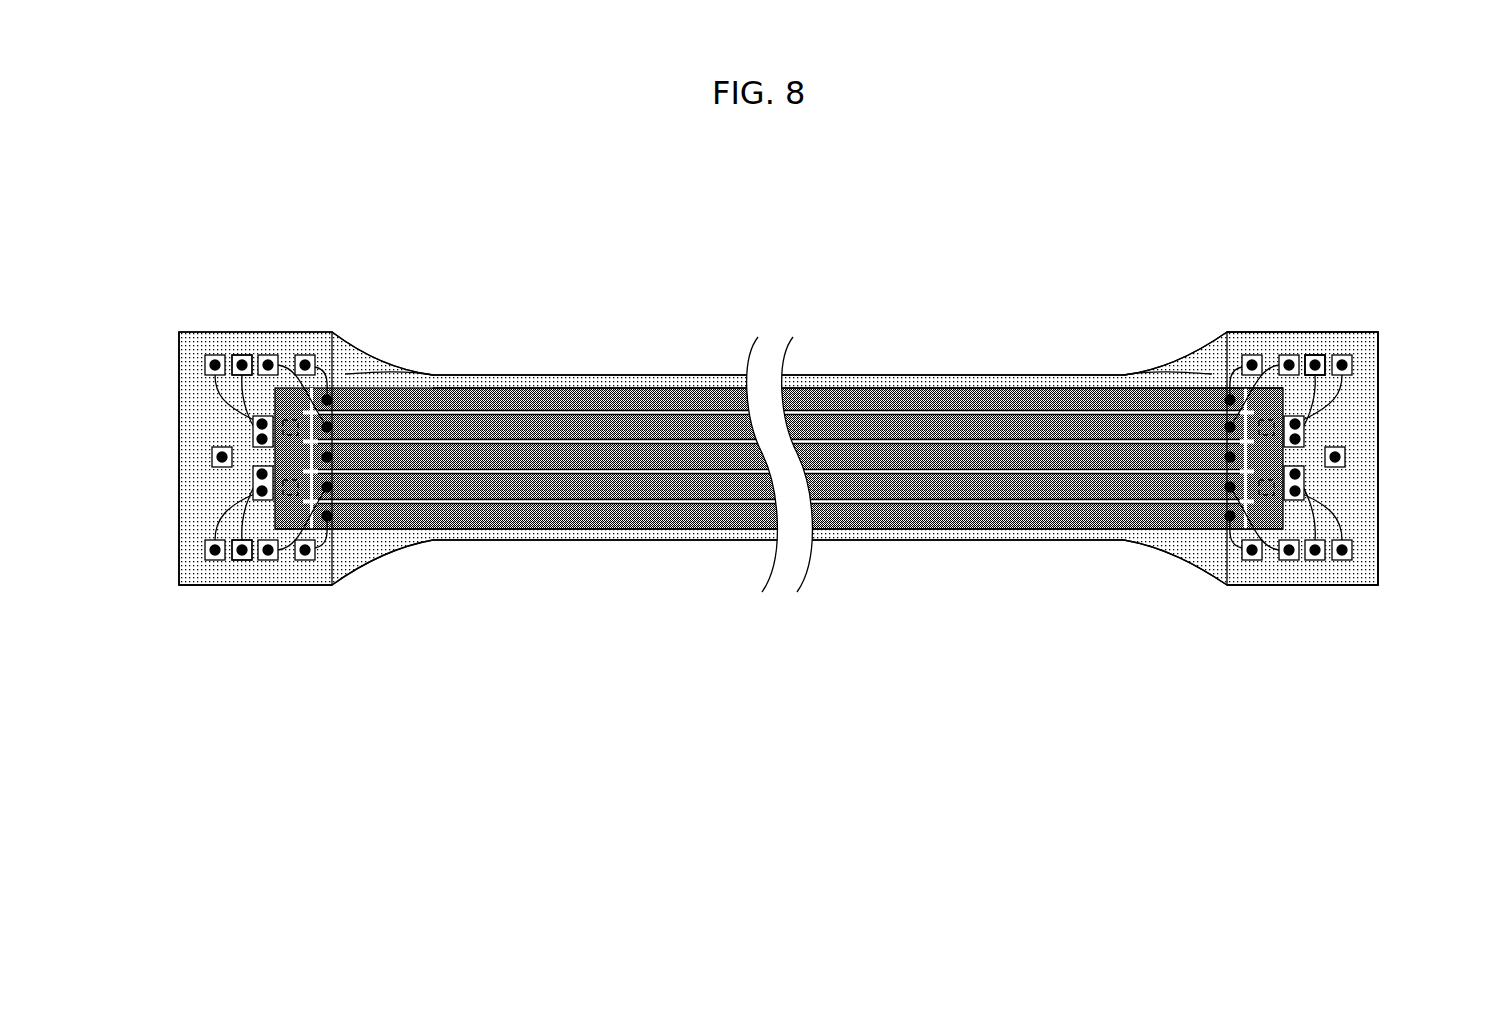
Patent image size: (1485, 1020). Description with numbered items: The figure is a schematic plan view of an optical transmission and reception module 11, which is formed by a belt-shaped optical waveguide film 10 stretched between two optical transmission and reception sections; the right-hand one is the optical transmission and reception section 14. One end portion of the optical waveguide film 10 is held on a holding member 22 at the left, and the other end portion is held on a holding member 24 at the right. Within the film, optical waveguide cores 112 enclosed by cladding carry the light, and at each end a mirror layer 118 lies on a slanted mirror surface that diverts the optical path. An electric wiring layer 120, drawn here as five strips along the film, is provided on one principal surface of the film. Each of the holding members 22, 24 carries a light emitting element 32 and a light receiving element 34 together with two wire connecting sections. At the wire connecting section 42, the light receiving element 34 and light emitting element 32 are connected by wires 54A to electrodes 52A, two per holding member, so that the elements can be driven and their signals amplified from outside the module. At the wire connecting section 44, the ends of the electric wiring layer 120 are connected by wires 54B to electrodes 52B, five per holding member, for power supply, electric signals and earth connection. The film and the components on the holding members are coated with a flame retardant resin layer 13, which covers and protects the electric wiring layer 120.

The optical waveguide film 10 is at (680, 386).
The optical transmission and reception module 11 is at (975, 220).
The flame retardant resin layer 13 is at (520, 375).
The optical transmission and reception section 14 is at (1362, 260).
The holding member 22 is at (180, 575).
The holding member 24 is at (1380, 582).
The light emitting element 32 is at (240, 352).
The light receiving element 34 is at (244, 565).
The wire connecting section 42 is at (190, 384).
The wire connecting section 44 is at (340, 357).
The electrodes 52A is at (220, 352).
The electrodes 52B is at (263, 352).
The wires 54A is at (248, 392).
The wires 54B is at (292, 352).
The optical waveguide core 112 is at (283, 428).
The mirror layer 118 is at (350, 373).
The electric wiring layer 120 is at (580, 388).